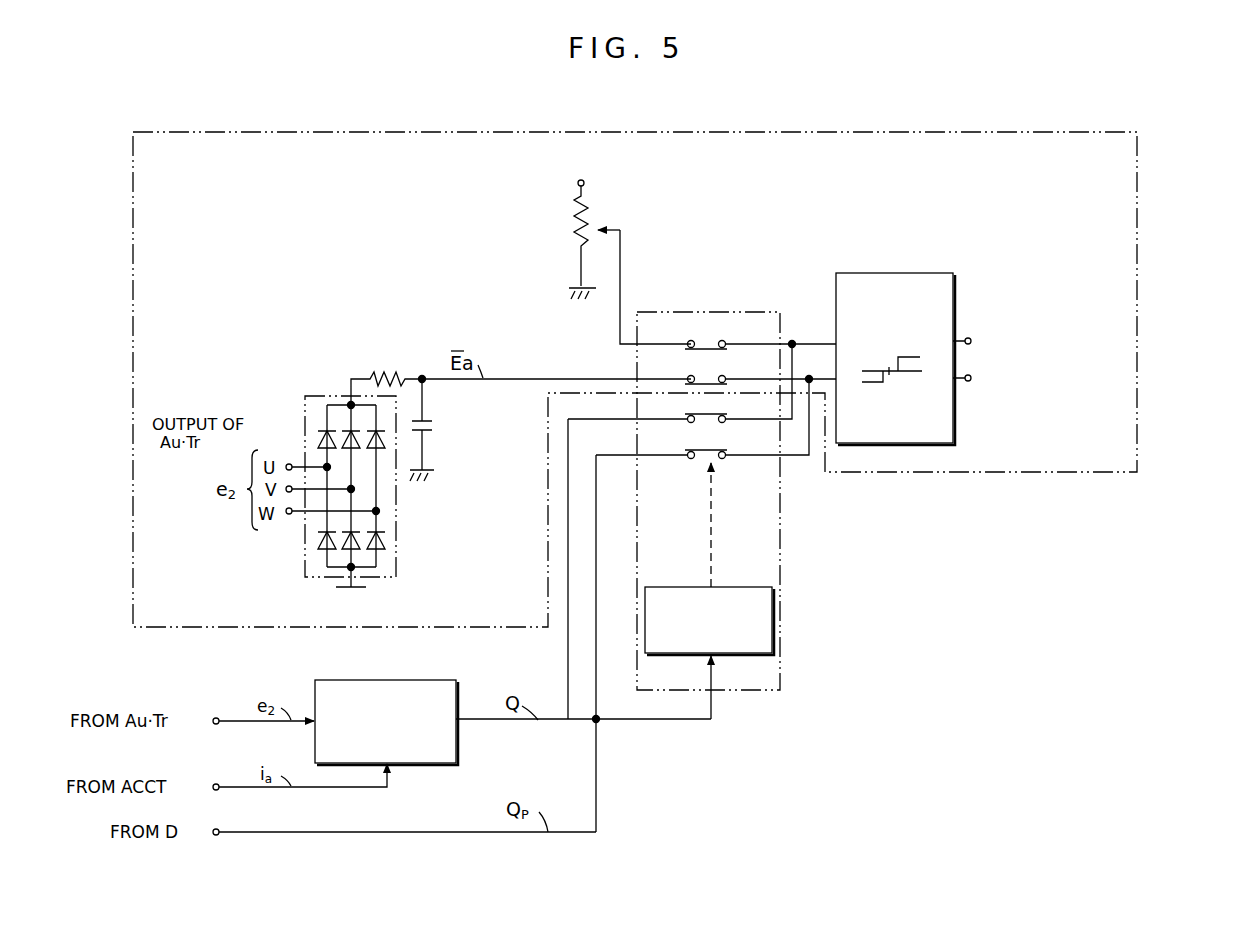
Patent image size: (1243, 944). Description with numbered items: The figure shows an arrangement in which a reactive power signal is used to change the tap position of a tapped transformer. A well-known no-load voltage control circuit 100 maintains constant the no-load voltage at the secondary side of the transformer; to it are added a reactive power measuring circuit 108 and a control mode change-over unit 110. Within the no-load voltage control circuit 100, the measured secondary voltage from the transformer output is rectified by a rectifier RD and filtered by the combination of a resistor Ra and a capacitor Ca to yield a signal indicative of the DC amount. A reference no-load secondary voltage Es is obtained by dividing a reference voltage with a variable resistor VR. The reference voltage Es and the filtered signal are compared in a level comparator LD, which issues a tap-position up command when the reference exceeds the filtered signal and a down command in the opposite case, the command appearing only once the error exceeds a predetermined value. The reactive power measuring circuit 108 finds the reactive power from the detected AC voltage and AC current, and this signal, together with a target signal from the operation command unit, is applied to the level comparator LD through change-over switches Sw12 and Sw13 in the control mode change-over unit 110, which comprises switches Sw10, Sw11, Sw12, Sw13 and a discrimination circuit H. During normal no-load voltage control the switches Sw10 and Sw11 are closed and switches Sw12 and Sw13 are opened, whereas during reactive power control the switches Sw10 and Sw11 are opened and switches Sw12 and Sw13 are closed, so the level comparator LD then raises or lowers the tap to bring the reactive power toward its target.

The no-load voltage control circuit 100 is at (1139, 182).
The reactive power measuring circuit 108 is at (410, 680).
The control mode change-over unit 110 is at (781, 641).
The rectifier RD is at (396, 556).
The resistor Ra is at (387, 374).
The capacitor Ca is at (433, 427).
The variable resistor VR is at (587, 228).
The reference no-load secondary voltage Es is at (622, 274).
The change-over switch Sw10 is at (706, 338).
The change-over switch Sw11 is at (706, 374).
The change-over switch Sw12 is at (708, 426).
The change-over switch Sw13 is at (708, 462).
The discrimination circuit H is at (720, 587).
The level comparator LD is at (886, 273).